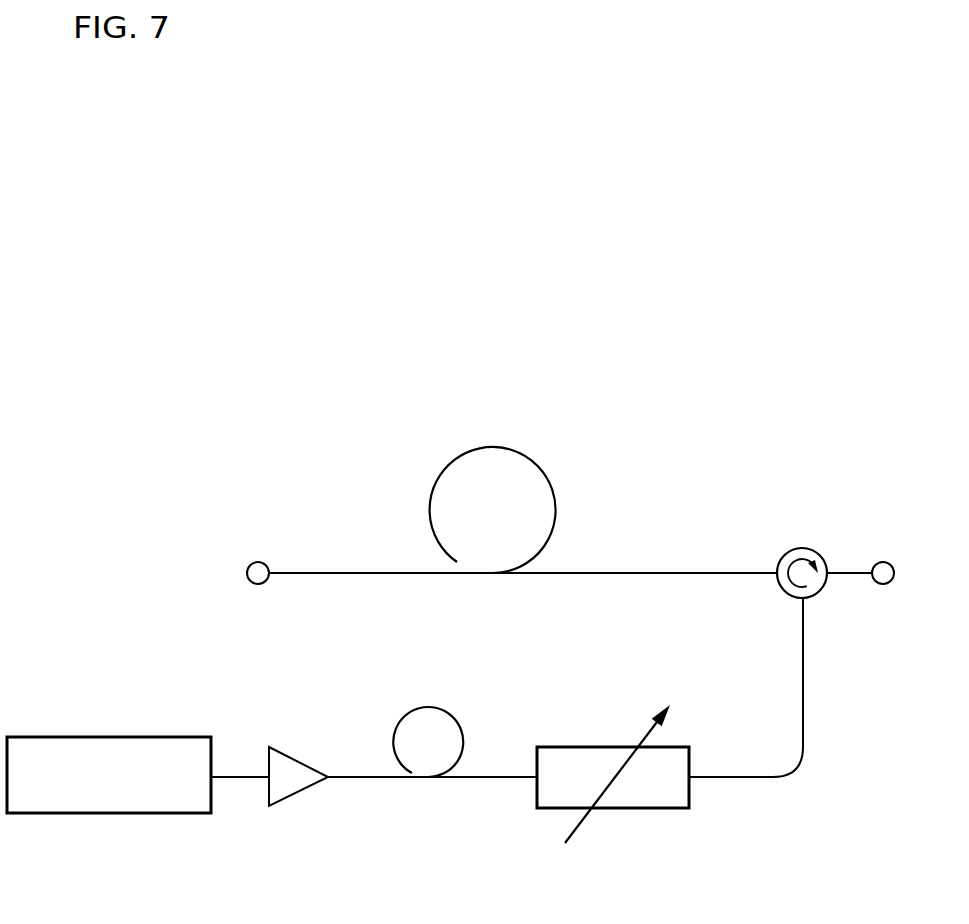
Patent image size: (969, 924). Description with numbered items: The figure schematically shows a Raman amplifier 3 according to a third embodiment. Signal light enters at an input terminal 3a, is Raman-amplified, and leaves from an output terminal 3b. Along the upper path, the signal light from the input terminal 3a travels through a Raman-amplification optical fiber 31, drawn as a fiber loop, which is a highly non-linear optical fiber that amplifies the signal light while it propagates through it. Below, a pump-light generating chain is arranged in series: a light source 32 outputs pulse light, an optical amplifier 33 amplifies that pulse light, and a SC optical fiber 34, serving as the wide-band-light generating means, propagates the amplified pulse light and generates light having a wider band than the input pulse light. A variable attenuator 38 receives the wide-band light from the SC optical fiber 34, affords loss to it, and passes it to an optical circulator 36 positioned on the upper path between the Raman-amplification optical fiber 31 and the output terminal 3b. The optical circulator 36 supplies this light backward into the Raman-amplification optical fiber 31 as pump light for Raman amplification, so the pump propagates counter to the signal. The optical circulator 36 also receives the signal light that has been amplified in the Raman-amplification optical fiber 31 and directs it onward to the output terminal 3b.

The Raman amplifier 3 is at (650, 303).
The input terminal 3a is at (258, 560).
The output terminal 3b is at (883, 561).
The Raman-amplification optical fiber 31 is at (493, 446).
The light source 32 is at (111, 814).
The optical amplifier 33 is at (298, 794).
The SC optical fiber 34 is at (429, 706).
The optical circulator 36 is at (803, 547).
The variable attenuator 38 is at (617, 809).